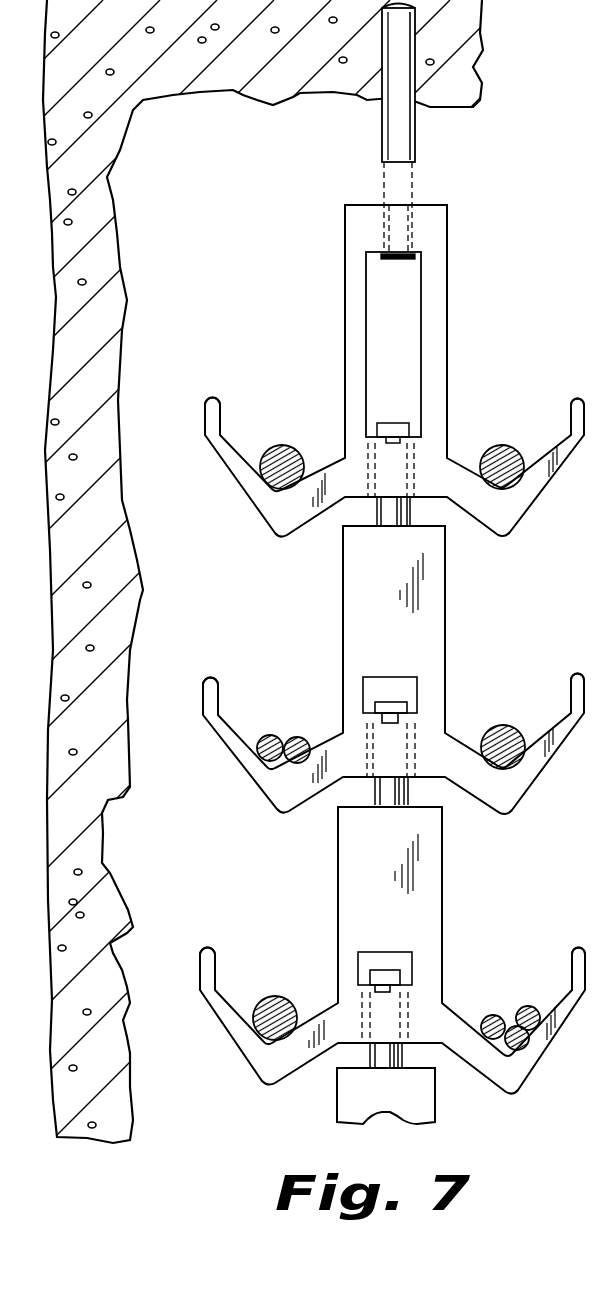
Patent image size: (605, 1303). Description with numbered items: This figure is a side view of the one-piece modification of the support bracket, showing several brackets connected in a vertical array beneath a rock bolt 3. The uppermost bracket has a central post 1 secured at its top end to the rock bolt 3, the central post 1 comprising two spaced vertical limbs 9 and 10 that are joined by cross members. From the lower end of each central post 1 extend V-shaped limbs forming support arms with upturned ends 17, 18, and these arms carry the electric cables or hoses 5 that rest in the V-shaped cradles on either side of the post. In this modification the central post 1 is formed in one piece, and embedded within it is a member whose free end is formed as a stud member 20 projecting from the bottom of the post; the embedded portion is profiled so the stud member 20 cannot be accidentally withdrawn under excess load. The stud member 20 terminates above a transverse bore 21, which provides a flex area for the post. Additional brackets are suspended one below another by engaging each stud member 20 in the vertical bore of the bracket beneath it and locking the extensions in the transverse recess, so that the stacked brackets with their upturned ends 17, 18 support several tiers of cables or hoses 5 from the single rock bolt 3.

The central post 1 is at (462, 608).
The rock bolt 3 is at (392, 140).
The electric cables or hoses 5 is at (283, 445).
The vertical limb 9 is at (355, 273).
The vertical limb 10 is at (433, 290).
The upturned end 17 is at (206, 408).
The upturned end 18 is at (573, 412).
The stud member 20 is at (390, 513).
The transverse bore 21 is at (377, 688).